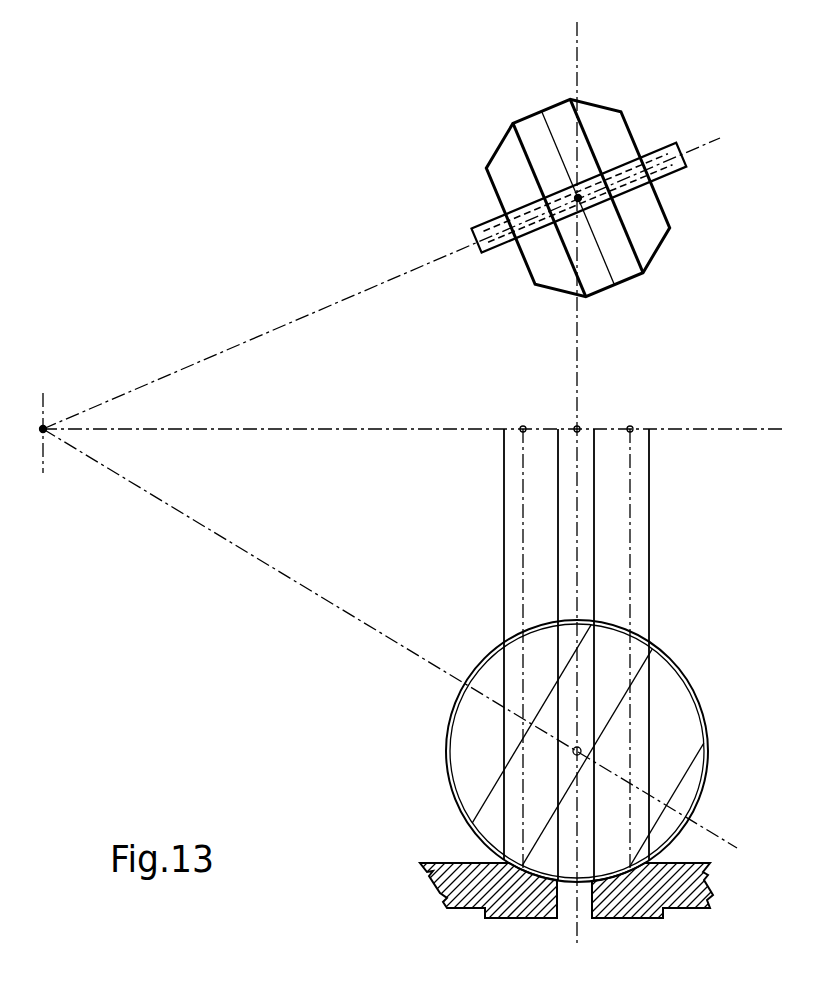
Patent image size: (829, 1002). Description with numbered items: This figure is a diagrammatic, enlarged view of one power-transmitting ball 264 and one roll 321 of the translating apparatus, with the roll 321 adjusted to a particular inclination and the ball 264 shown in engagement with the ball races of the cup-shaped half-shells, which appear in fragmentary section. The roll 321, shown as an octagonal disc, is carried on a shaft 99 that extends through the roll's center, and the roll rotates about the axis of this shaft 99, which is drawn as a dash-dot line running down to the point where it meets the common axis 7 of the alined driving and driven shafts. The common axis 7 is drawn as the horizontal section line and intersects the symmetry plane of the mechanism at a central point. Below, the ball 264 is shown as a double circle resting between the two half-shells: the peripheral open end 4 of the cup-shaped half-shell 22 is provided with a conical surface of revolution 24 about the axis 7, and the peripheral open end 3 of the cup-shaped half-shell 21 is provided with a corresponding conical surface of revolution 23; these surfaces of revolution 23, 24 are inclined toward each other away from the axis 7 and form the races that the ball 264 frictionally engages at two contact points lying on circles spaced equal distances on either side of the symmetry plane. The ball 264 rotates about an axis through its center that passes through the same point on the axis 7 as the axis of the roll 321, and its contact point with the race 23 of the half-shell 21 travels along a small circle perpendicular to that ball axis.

The roll 321 is at (556, 152).
The shaft 99 is at (483, 255).
The power-transmitting ball 264 is at (446, 768).
The cup-shaped half-shell 22 is at (445, 902).
The surface of revolution (ball race) 24 is at (545, 887).
The peripheral open end 4 is at (563, 908).
The peripheral open end 3 is at (587, 913).
The surface of revolution (ball race) 23 is at (614, 887).
The cup-shaped half-shell 21 is at (710, 907).
The common axis 7 is at (415, 430).